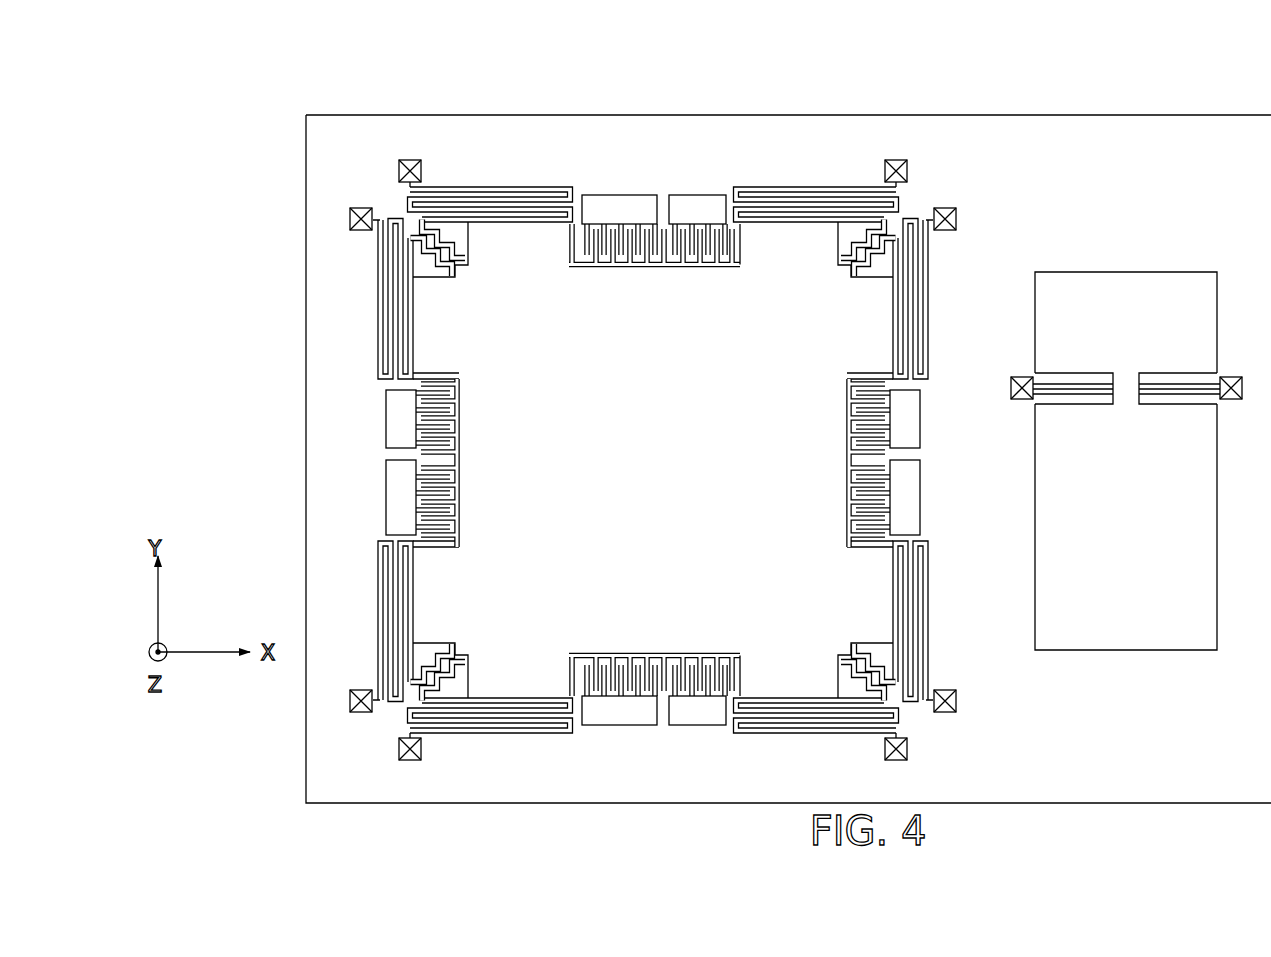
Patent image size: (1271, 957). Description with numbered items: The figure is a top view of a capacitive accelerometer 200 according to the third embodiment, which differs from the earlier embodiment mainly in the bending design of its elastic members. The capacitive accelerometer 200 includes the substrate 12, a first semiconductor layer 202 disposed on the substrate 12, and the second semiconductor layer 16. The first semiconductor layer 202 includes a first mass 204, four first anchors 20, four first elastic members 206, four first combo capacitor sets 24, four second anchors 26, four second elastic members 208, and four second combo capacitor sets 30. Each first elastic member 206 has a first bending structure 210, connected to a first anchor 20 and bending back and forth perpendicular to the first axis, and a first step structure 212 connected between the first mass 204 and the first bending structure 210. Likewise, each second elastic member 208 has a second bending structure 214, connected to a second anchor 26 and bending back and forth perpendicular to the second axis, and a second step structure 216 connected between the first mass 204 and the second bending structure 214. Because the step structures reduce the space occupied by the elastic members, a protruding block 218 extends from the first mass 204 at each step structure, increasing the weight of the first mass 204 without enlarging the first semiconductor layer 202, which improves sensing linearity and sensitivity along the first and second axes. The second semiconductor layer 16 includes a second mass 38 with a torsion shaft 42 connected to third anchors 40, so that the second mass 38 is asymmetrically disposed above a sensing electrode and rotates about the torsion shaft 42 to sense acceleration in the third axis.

The substrate 12 is at (352, 113).
The second semiconductor layer 16 is at (1158, 240).
The first anchor 20 is at (356, 210).
The first combo capacitor set 24 is at (412, 427).
The second anchor 26 is at (402, 162).
The second combo capacitor set 30 is at (630, 195).
The second mass 38 is at (1192, 272).
The third anchor 40 is at (1022, 375).
The torsion shaft 42 is at (1185, 395).
The capacitive accelerometer 200 is at (280, 140).
The first semiconductor layer 202 is at (932, 184).
The first mass 204 is at (650, 515).
The first elastic member 206 is at (600, 460).
The second elastic member 208 is at (653, 420).
The first bending structure 210 is at (385, 270).
The first step structure 212 is at (410, 240).
The second bending structure 214 is at (520, 190).
The second step structure 216 is at (453, 240).
The protruding block 218 is at (553, 232).